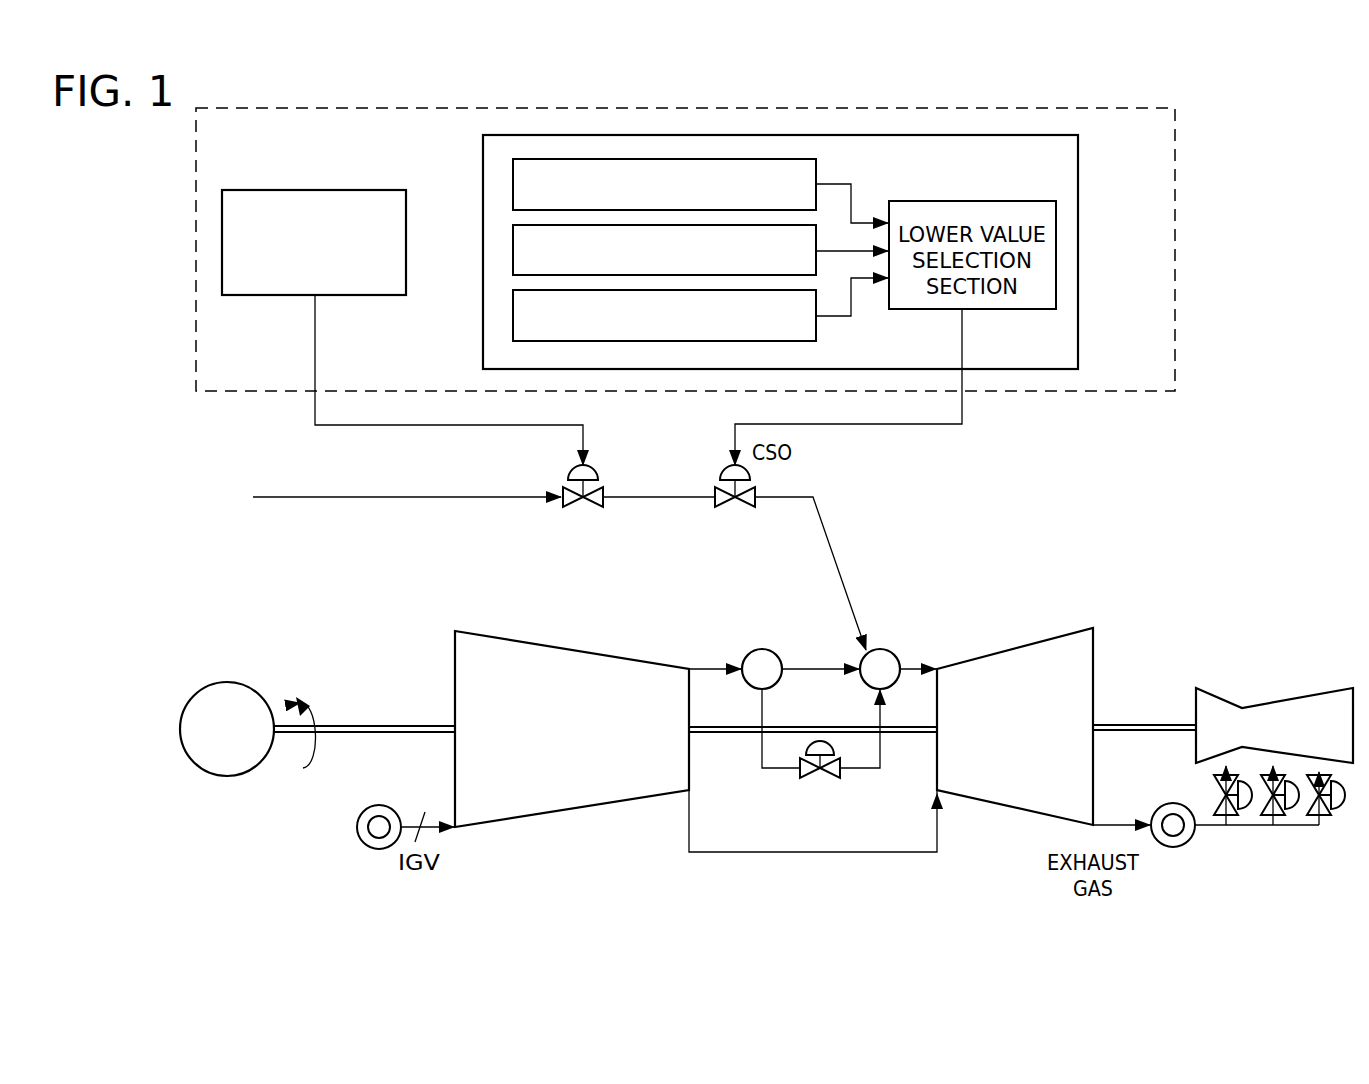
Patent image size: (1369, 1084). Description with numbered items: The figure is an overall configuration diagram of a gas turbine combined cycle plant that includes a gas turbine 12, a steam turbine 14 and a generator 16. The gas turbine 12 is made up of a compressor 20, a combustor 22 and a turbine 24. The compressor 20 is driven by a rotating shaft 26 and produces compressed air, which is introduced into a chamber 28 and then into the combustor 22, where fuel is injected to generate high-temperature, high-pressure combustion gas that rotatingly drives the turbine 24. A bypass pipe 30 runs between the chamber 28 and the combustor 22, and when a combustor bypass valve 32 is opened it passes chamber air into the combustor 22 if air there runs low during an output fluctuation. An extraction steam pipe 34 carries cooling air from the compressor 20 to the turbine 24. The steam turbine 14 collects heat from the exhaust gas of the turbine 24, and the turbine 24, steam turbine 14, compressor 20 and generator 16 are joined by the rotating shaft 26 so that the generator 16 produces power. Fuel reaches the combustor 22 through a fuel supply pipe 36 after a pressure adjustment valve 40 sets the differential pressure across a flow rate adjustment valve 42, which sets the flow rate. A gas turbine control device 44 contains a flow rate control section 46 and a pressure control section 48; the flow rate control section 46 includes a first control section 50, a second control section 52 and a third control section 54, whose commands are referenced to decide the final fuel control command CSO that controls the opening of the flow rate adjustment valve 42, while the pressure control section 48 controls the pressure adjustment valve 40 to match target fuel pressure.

The gas turbine 12 is at (1057, 505).
The steam turbine 14 is at (1220, 688).
The generator 16 is at (222, 683).
The compressor 20 is at (545, 631).
The combustor 22 is at (893, 650).
The turbine 24 is at (1010, 642).
The rotating shaft 26 is at (725, 738).
The chamber 28 is at (760, 648).
The bypass pipe 30 is at (763, 703).
The combustor bypass valve 32 is at (828, 780).
The extraction steam pipe 34 is at (808, 854).
The fuel supply pipe 36 is at (652, 500).
The pressure adjustment valve 40 is at (588, 508).
The flow rate adjustment valve 42 is at (740, 508).
The gas turbine control device 44 is at (1175, 318).
The flow rate control section 46 is at (1078, 181).
The pressure control section 48 is at (262, 297).
The first control section 50 is at (511, 181).
The second control section 52 is at (511, 247).
The third control section 54 is at (511, 313).